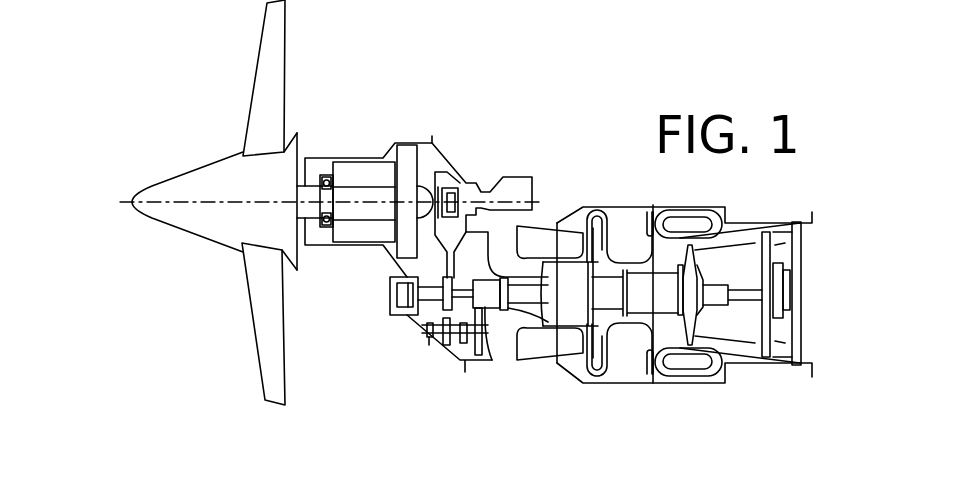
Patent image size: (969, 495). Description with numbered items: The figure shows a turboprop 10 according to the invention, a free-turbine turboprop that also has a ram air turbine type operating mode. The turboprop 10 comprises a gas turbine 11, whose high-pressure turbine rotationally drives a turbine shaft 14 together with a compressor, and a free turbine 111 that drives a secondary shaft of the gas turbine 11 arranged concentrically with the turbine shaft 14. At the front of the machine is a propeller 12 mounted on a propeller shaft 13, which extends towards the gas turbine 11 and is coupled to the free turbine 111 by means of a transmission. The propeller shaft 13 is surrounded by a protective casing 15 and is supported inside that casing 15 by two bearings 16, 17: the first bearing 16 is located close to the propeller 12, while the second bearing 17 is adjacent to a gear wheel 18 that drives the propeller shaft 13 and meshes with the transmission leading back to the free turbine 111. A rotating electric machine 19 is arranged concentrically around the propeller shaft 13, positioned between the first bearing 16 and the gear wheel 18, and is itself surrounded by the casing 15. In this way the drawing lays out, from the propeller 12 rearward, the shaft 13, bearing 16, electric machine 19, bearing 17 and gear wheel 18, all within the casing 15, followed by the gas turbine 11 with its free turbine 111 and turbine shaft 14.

The turboprop 10 is at (138, 70).
The gas turbine 11 is at (546, 394).
The free turbine 111 is at (768, 338).
The propeller 12 is at (133, 232).
The propeller shaft 13 is at (307, 210).
The turbine shaft 14 is at (380, 290).
The protective casing 15 is at (431, 137).
The bearing 16 is at (328, 228).
The bearing 17 is at (441, 188).
The gear wheel 18 is at (411, 153).
The rotating electric machine 19 is at (360, 225).